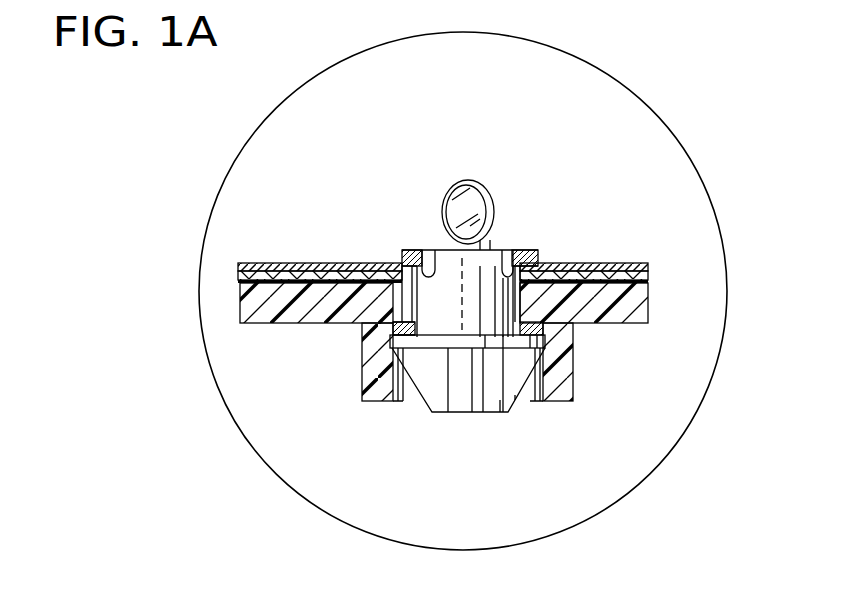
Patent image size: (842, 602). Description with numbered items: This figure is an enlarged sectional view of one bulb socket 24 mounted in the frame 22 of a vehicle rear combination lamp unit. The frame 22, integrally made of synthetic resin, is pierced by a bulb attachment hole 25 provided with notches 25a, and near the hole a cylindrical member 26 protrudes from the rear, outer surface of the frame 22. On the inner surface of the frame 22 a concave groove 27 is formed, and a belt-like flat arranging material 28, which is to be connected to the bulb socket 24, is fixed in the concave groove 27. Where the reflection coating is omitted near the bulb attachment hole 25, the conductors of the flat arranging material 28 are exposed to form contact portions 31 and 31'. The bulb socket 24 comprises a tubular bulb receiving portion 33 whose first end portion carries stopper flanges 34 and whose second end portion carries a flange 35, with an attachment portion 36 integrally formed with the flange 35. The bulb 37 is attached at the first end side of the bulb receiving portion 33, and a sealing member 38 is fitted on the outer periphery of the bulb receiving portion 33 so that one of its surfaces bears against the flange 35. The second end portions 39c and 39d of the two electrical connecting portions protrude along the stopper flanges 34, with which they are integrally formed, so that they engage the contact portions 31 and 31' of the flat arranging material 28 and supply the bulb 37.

The frame 22 is at (266, 262).
The bulb socket 24 is at (492, 413).
The bulb attachment hole 25 is at (400, 310).
The notch 25a is at (536, 298).
The cylindrical member 26 is at (577, 362).
The concave groove 27 is at (300, 288).
The flat arranging material 28 is at (238, 265).
The contact portion 31 is at (356, 259).
The contact portion 31' is at (569, 254).
The bulb receiving portion 33 is at (507, 250).
The stopper flange 34 is at (404, 252).
The flange 35 is at (424, 343).
The attachment portion 36 is at (457, 400).
The bulb 37 is at (456, 182).
The sealing member 38 is at (393, 337).
The second end portion of electrical connecting portion 39c is at (428, 252).
The second end portion of electrical connecting portion 39d is at (508, 250).